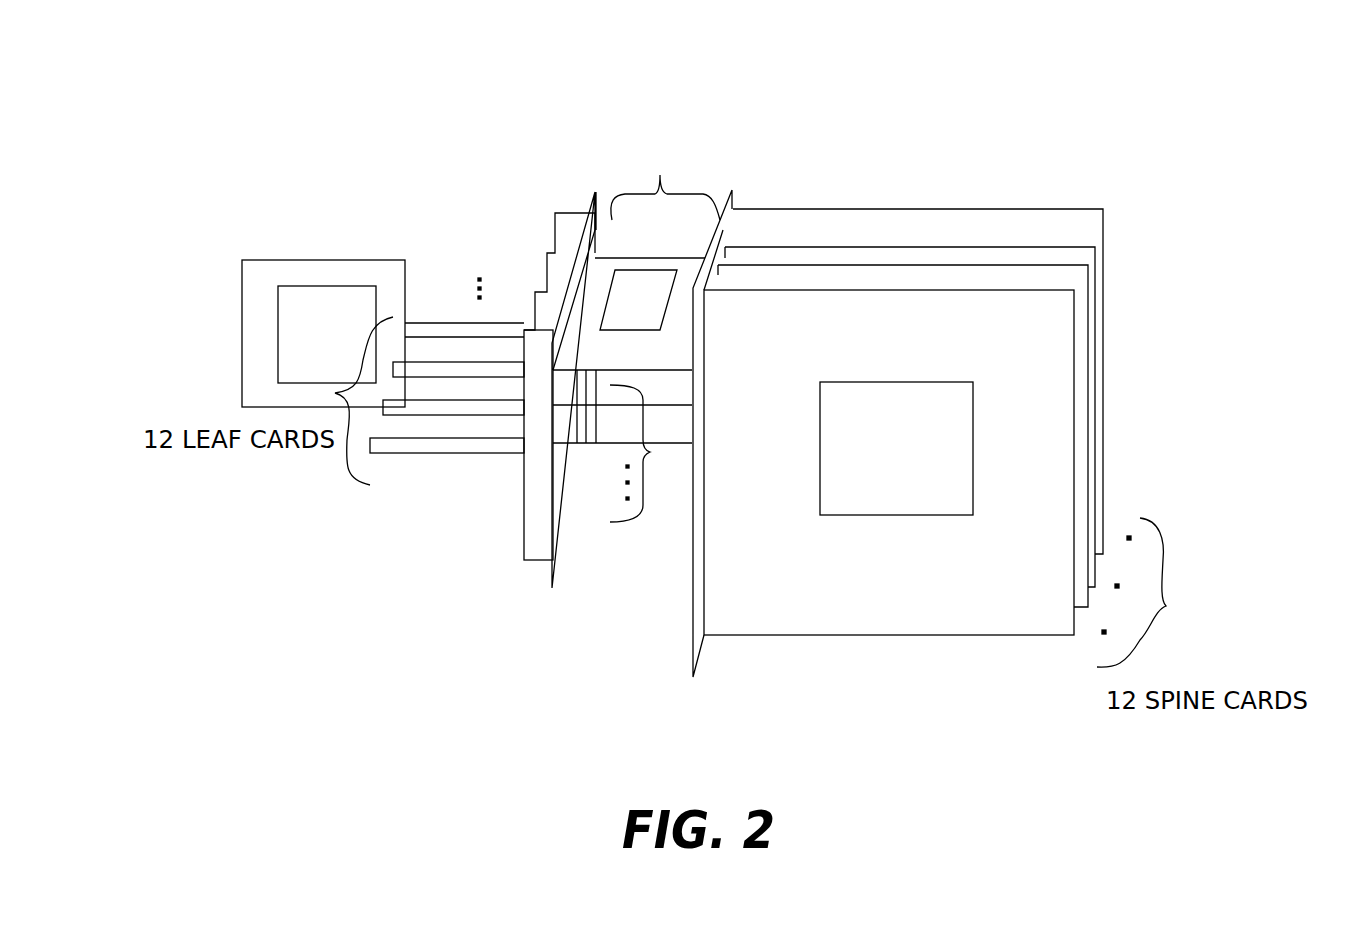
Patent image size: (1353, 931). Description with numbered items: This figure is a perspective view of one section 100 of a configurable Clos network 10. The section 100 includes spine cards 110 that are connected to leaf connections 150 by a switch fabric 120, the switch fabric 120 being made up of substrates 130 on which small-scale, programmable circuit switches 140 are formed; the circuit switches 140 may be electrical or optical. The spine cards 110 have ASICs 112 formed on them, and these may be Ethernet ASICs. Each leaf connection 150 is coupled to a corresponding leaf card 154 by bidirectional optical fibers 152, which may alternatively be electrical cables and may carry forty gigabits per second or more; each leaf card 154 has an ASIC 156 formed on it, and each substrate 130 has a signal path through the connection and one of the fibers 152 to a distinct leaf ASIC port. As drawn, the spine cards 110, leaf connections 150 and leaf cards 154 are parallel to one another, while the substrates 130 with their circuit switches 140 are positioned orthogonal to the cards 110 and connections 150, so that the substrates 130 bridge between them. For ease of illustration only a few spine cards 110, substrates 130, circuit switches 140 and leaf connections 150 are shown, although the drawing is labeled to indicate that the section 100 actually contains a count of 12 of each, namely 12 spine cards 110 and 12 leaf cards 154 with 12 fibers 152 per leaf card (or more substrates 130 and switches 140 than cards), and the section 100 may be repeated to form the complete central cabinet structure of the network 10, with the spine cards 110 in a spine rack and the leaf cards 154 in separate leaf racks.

The configurable Clos network 10 is at (884, 92).
The section 100 is at (1222, 118).
The spine cards 110 is at (1104, 288).
The ASICs 112 is at (898, 495).
The switch fabric 120 is at (638, 190).
The substrates 130 is at (636, 292).
The circuit switches 140 is at (642, 288).
The leaf connections 150 is at (537, 483).
The bidirectional optical fibers 152 is at (427, 320).
The leaf cards 154 is at (260, 273).
The ASIC 156 is at (340, 284).
The midplane cards 12 is at (631, 446).